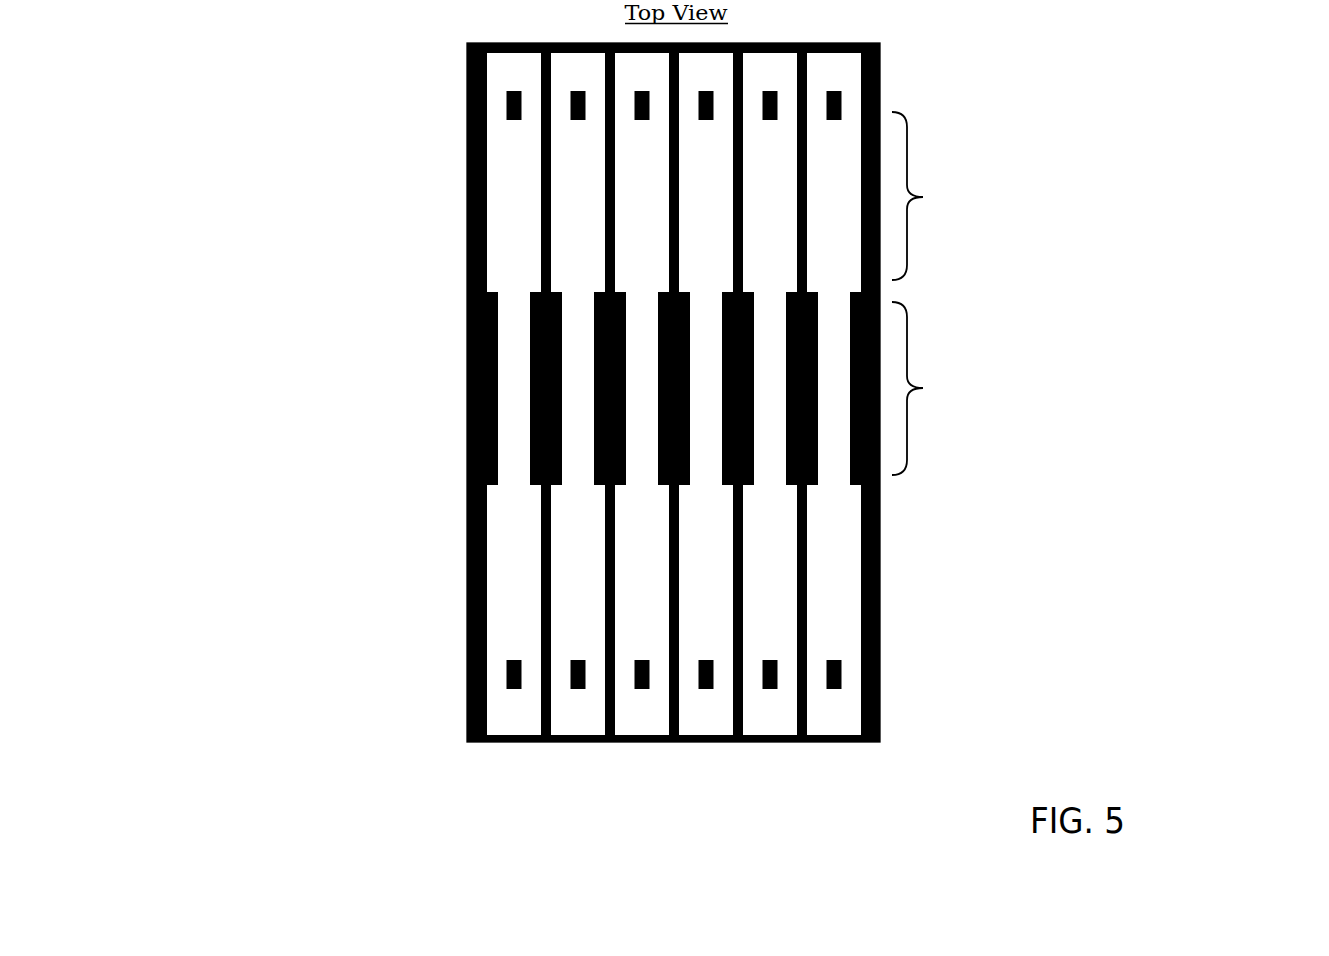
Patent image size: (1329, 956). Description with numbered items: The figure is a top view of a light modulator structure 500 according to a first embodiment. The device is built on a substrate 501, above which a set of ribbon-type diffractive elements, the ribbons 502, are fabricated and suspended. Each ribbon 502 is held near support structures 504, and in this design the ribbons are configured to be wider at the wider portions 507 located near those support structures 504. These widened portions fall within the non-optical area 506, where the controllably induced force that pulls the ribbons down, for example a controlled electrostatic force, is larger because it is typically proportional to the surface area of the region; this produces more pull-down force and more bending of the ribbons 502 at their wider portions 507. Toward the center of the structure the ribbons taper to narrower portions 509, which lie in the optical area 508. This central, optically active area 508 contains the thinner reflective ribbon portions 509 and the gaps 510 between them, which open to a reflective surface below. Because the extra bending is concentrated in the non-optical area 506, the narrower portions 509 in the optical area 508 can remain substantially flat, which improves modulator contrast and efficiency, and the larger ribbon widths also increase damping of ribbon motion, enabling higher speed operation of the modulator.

The light modulator structure 500 is at (1293, 830).
The substrate 501 is at (473, 594).
The ribbon-type diffractive element 502 is at (833, 597).
The support structure 504 is at (833, 690).
The non-optical area 506 is at (1044, 196).
The wider portion 507 is at (500, 216).
The optical area 508 is at (1017, 388).
The narrower portion 509 is at (503, 447).
The gaps 510 is at (538, 361).